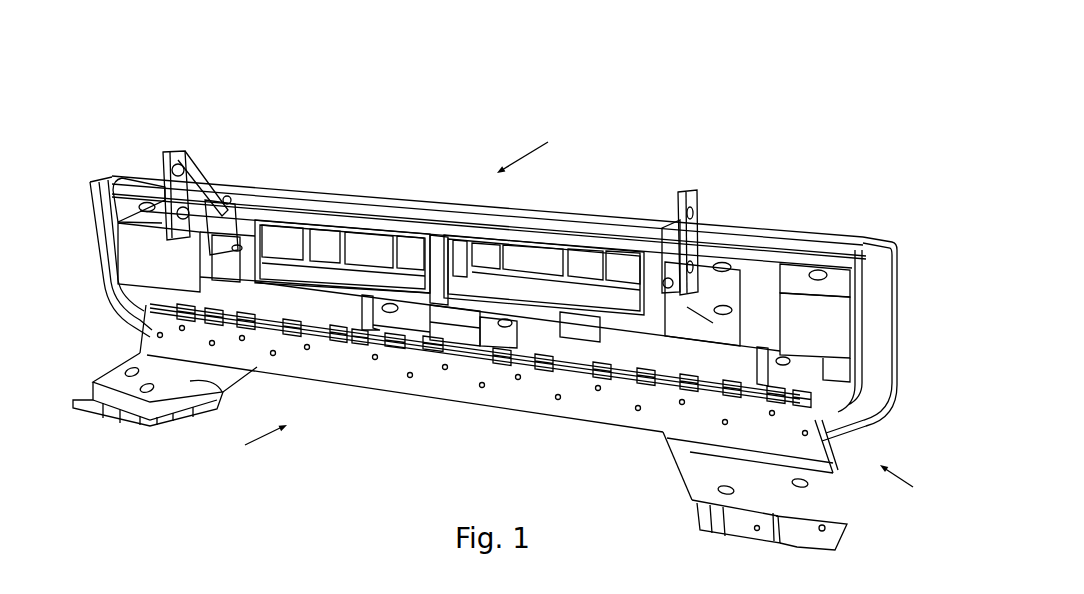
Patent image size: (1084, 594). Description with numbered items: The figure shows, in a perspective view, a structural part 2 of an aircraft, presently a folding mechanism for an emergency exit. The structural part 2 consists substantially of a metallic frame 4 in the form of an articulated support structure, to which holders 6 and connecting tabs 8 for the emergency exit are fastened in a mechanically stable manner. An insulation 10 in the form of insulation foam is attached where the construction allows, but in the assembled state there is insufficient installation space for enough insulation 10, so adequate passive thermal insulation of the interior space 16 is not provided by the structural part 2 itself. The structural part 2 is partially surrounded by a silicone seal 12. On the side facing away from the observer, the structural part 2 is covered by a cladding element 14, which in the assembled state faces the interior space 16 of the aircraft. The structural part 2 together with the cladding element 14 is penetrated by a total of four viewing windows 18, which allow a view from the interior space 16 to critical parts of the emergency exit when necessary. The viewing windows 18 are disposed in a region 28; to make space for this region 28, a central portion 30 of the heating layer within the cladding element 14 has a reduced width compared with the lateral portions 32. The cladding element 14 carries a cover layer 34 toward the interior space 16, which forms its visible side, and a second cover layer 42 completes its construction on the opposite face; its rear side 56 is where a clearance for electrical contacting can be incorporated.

The structural part 2 is at (502, 317).
The metallic frame 4 is at (132, 195).
The holders 6 is at (184, 176).
The connecting tabs 8 is at (195, 381).
The insulation 10 is at (152, 233).
The silicone seal 12 is at (112, 258).
The cladding element 14 is at (690, 316).
The interior space 16 is at (647, 172).
The viewing windows 18 is at (318, 233).
The region 28 is at (575, 208).
The central portion 30 is at (506, 140).
The lateral portions 32 is at (486, 192).
The cover layer 34 is at (813, 245).
The second cover layer 42 is at (870, 408).
The rear side 56 is at (333, 412).